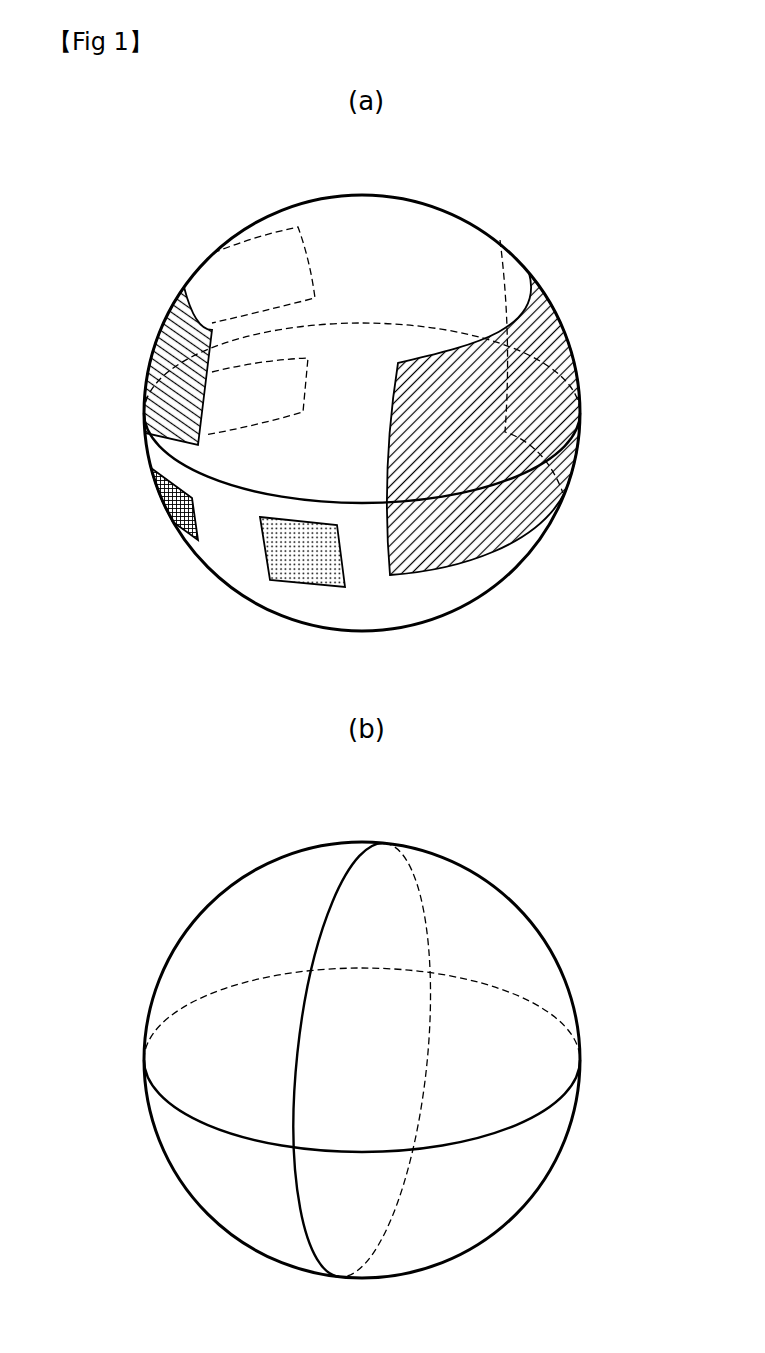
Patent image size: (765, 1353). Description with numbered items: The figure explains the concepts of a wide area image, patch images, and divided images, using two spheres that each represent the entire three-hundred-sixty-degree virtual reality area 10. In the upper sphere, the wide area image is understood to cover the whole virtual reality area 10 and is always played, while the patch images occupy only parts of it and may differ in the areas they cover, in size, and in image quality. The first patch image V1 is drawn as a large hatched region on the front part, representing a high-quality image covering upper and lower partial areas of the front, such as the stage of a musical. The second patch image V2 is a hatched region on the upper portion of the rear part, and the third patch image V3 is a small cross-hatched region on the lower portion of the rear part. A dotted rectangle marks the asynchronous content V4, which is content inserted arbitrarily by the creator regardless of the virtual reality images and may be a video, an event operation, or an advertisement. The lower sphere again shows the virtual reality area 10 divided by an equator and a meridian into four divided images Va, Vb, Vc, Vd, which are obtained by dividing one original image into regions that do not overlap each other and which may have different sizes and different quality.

The virtual reality area 10 is at (492, 208).
The first patch image V1 is at (547, 340).
The second patch image V2 is at (173, 340).
The third patch image V3 is at (160, 520).
The asynchronous content V4 is at (297, 553).
The divided image Va is at (523, 953).
The divided image Vb is at (490, 1210).
The divided image Vc is at (225, 1197).
The divided image Vd is at (227, 922).